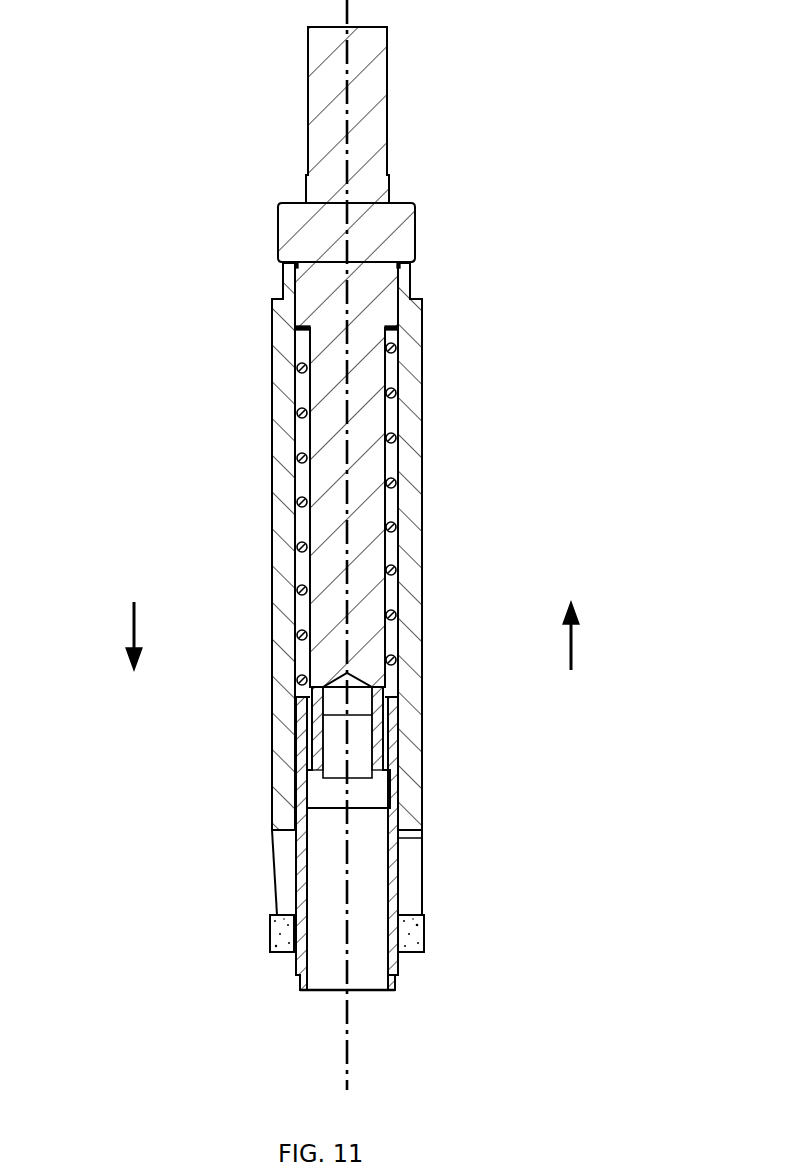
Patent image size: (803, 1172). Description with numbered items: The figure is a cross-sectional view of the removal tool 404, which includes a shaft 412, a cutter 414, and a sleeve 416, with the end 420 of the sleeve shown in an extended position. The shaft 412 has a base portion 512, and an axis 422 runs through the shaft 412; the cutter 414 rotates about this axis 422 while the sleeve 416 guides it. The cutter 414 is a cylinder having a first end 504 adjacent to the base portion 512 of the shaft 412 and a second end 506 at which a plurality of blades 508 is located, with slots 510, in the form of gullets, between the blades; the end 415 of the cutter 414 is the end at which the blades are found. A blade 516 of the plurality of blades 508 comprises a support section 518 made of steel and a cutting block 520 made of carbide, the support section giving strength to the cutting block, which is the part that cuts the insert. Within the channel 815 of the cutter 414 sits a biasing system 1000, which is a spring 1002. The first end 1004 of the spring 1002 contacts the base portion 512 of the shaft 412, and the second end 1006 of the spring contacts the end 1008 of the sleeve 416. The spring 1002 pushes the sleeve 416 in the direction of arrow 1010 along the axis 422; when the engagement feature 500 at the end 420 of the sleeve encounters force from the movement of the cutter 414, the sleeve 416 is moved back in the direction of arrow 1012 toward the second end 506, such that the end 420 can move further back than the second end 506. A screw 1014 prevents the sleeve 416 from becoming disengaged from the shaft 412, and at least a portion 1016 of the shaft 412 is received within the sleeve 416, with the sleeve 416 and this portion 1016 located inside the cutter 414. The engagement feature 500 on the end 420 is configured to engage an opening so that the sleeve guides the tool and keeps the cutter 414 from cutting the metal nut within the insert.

The shaft 412 is at (308, 100).
The base portion 512 is at (292, 233).
The first end 504 is at (410, 270).
The first end 1004 is at (410, 343).
The channel 815 is at (431, 389).
The cutter 414 is at (264, 400).
The biasing system 1000 is at (407, 478).
The portion 1016 is at (405, 555).
The spring 1002 is at (396, 618).
The sleeve 416 is at (405, 650).
The end 1008 is at (400, 686).
The removal tool 404 is at (273, 625).
The second end 1006 is at (312, 715).
The screw 1014 is at (395, 790).
The arrow 1010 is at (130, 630).
The arrow 1012 is at (575, 650).
The blade 516 is at (273, 873).
The support section 518 is at (270, 917).
The cutting block 520 is at (270, 947).
The end 415 is at (288, 955).
The end 420 is at (300, 992).
The axis 422 is at (345, 1073).
The engagement feature 500 is at (400, 990).
The second end 506 is at (415, 953).
The plurality of blades 508 is at (377, 1024).
The slots 510 is at (444, 1044).